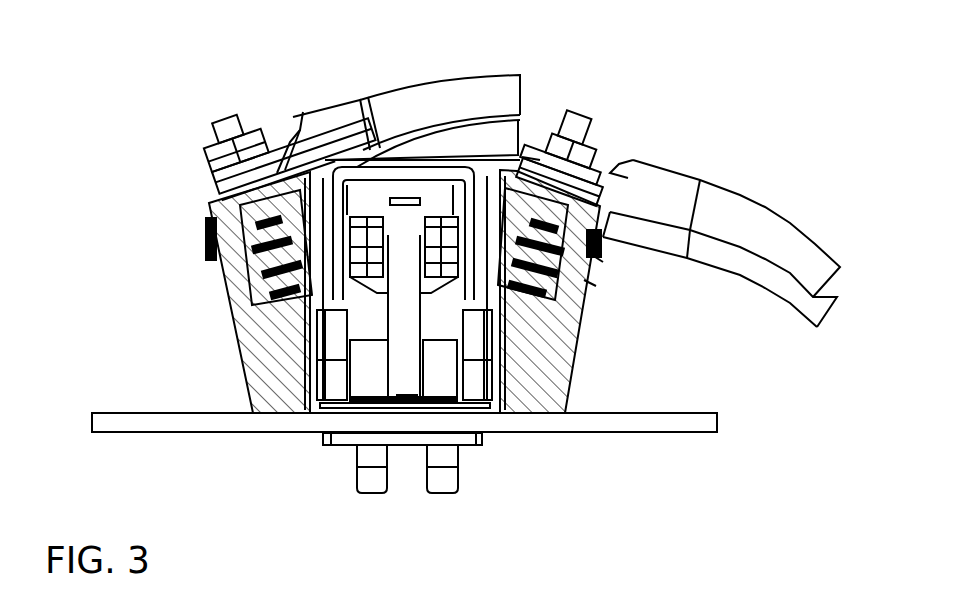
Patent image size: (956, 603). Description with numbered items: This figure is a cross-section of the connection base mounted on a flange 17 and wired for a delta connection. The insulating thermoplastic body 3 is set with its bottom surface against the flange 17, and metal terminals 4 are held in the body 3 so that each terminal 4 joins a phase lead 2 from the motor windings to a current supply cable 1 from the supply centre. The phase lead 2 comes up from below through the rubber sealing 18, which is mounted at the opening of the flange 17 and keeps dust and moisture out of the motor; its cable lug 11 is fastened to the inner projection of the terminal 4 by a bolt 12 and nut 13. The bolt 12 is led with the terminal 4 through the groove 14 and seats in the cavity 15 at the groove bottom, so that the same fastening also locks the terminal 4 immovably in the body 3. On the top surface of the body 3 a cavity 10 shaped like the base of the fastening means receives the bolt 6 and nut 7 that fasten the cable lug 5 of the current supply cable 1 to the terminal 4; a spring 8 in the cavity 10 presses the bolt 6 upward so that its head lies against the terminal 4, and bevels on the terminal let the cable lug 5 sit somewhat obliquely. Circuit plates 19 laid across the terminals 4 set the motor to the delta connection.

The current supply cable 1 is at (397, 143).
The phase lead 2 is at (357, 461).
The body 3 is at (236, 337).
The terminal 4 is at (208, 202).
The cable lug 5 is at (322, 122).
The bolt 6 is at (222, 118).
The nut 7 is at (222, 153).
The spring 8 is at (598, 262).
The cavity 10 is at (590, 283).
The cable lug 11 is at (292, 388).
The bolt 12 is at (423, 213).
The nut 13 is at (400, 200).
The groove 14 is at (210, 250).
The cavity 15 is at (232, 287).
The flange 17 is at (178, 427).
The rubber sealing 18 is at (417, 447).
The circuit plate 19 is at (530, 157).